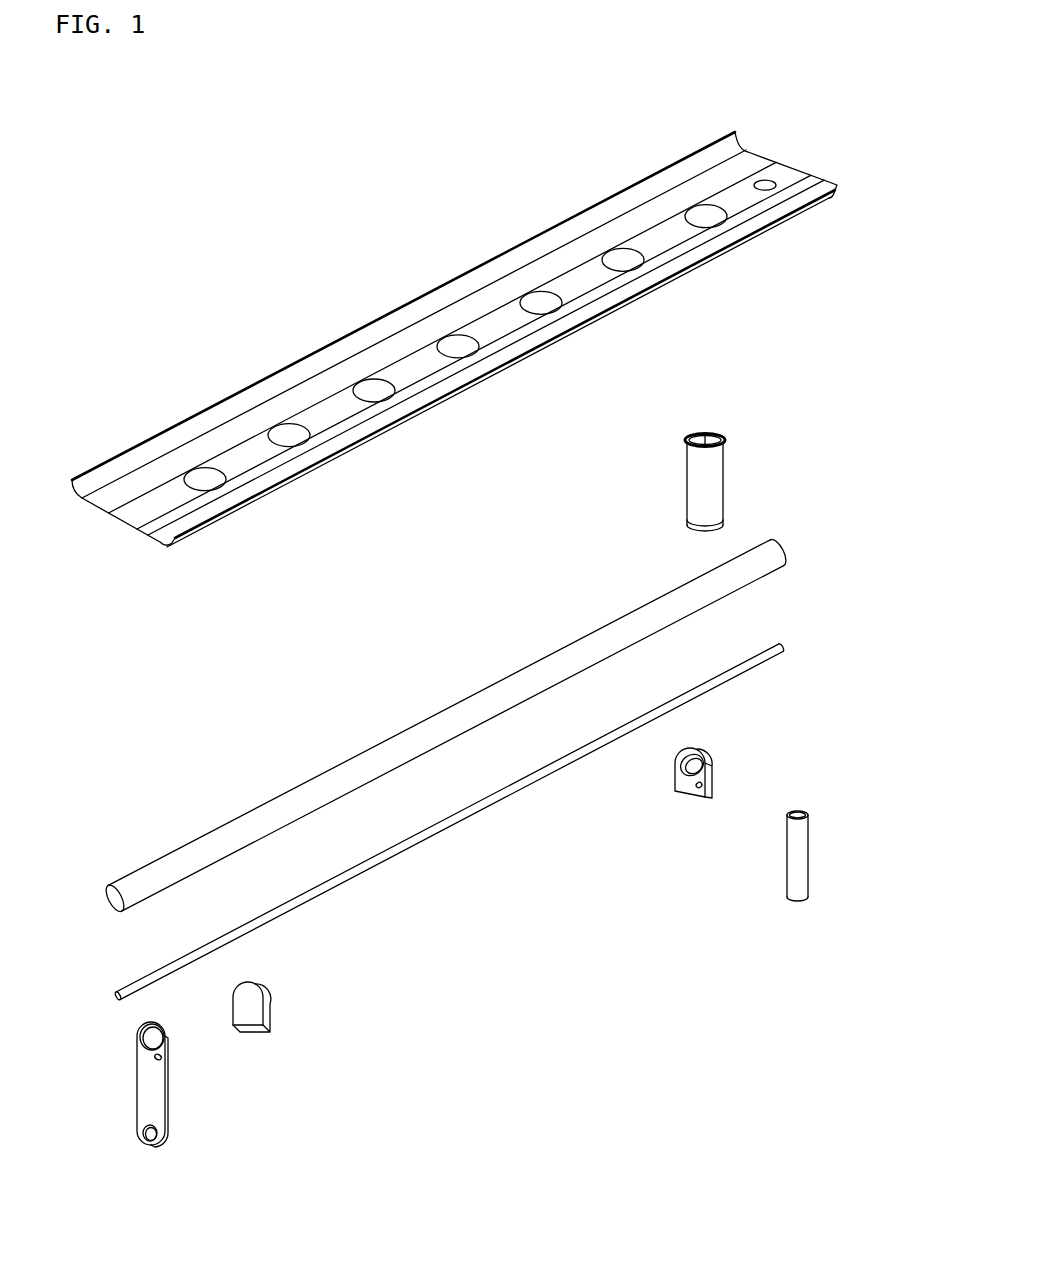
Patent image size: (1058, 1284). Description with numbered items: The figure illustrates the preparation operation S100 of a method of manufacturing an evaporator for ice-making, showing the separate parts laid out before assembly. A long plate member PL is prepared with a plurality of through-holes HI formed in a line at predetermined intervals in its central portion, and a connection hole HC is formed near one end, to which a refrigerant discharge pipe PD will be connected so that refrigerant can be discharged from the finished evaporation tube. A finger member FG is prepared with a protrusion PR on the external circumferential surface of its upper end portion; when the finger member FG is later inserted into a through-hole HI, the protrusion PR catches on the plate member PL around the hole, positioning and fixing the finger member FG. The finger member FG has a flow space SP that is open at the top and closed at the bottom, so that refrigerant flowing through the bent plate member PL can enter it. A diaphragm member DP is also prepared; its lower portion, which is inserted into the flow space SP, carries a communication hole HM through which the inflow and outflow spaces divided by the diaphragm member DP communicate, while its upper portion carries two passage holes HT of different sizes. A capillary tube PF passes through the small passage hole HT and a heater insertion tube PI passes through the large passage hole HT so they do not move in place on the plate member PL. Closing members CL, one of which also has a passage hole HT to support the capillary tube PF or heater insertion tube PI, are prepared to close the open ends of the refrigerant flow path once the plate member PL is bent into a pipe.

The preparation operation S100 is at (270, 138).
The plate member PL is at (294, 350).
The through-hole HI is at (622, 258).
The connection hole HC is at (767, 184).
The finger member FG is at (737, 488).
The protrusion PR is at (686, 437).
The flow space SP is at (706, 433).
The heater insertion tube PI is at (533, 650).
The capillary tube PF is at (576, 778).
The closing member CL is at (719, 738).
The passage hole HT is at (691, 772).
The refrigerant discharge pipe PD is at (791, 846).
The diaphragm member DP is at (183, 1087).
The communication hole HM is at (146, 1142).